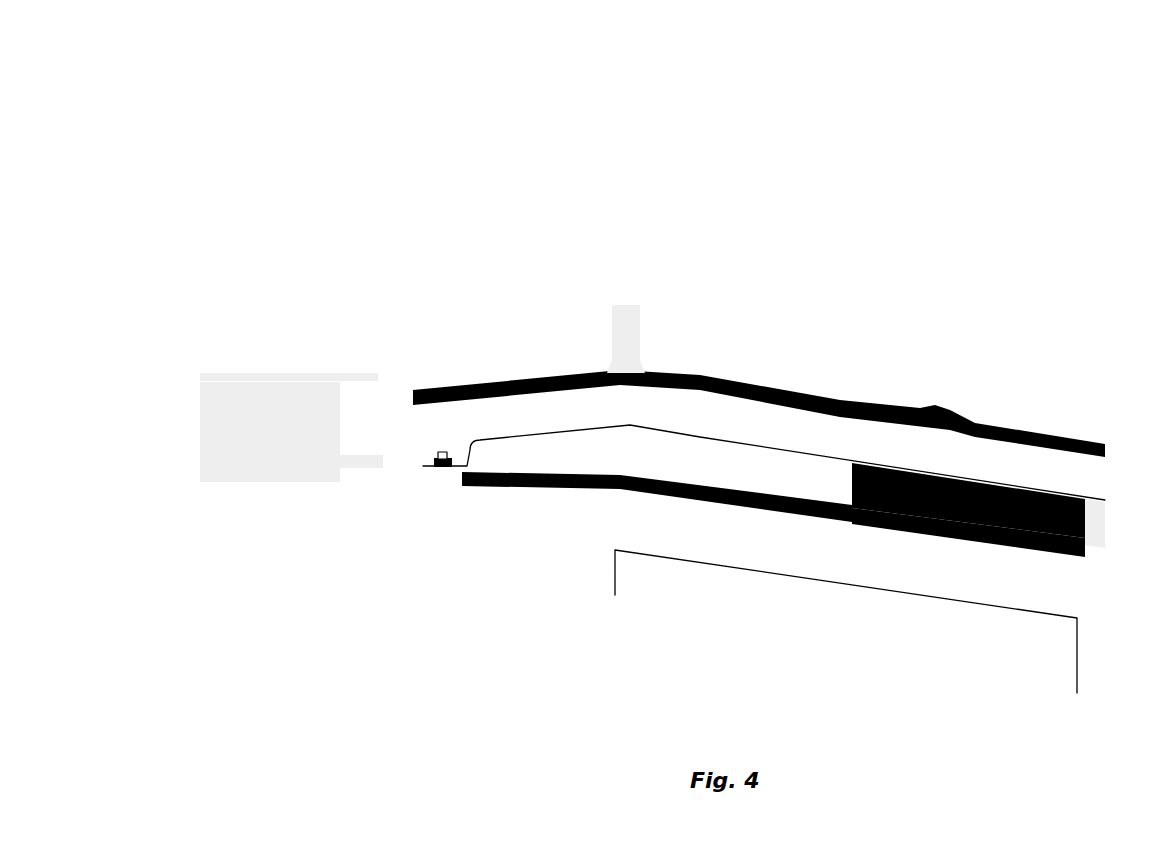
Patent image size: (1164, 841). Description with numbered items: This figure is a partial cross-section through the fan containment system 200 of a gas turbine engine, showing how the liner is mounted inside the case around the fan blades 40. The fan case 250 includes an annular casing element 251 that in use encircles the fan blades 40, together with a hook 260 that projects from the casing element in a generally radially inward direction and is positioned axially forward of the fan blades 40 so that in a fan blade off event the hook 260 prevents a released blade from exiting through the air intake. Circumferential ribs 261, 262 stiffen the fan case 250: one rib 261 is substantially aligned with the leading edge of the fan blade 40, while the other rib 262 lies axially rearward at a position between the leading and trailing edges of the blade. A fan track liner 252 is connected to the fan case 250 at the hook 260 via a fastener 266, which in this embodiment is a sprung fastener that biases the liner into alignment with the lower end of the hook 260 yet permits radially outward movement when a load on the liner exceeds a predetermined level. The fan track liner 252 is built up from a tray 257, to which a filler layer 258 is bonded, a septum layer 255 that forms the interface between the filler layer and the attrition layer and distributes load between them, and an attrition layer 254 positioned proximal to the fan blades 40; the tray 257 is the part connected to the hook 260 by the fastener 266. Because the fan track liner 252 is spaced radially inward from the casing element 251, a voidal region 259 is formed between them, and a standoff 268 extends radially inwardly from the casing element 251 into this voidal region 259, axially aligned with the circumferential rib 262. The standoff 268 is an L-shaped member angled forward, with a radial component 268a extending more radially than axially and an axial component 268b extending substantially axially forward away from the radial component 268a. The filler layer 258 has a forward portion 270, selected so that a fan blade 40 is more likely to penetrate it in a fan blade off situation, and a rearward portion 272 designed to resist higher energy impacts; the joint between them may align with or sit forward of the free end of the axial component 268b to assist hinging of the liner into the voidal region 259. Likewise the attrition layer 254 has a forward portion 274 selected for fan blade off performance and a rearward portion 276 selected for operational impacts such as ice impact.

The fan containment system 200 is at (912, 168).
The fan case 250 is at (670, 365).
The annular casing element 251 is at (717, 393).
The fan track liner 252 is at (471, 425).
The attrition layer 254 is at (512, 480).
The septum layer 255 is at (793, 497).
The tray 257 is at (782, 450).
The filler layer 258 is at (610, 453).
The voidal region 259 is at (692, 426).
The hook 260 is at (383, 448).
The circumferential rib 261 is at (613, 333).
The circumferential rib 262 is at (956, 360).
The fastener 266 is at (433, 465).
The standoff 268 is at (955, 438).
The radial component 268a is at (950, 463).
The axial component 268b is at (928, 465).
The forward portion 270 is at (727, 473).
The rearward portion 272 is at (972, 518).
The forward portion 274 is at (635, 493).
The rearward portion 276 is at (867, 530).
The fan blades 40 is at (630, 578).